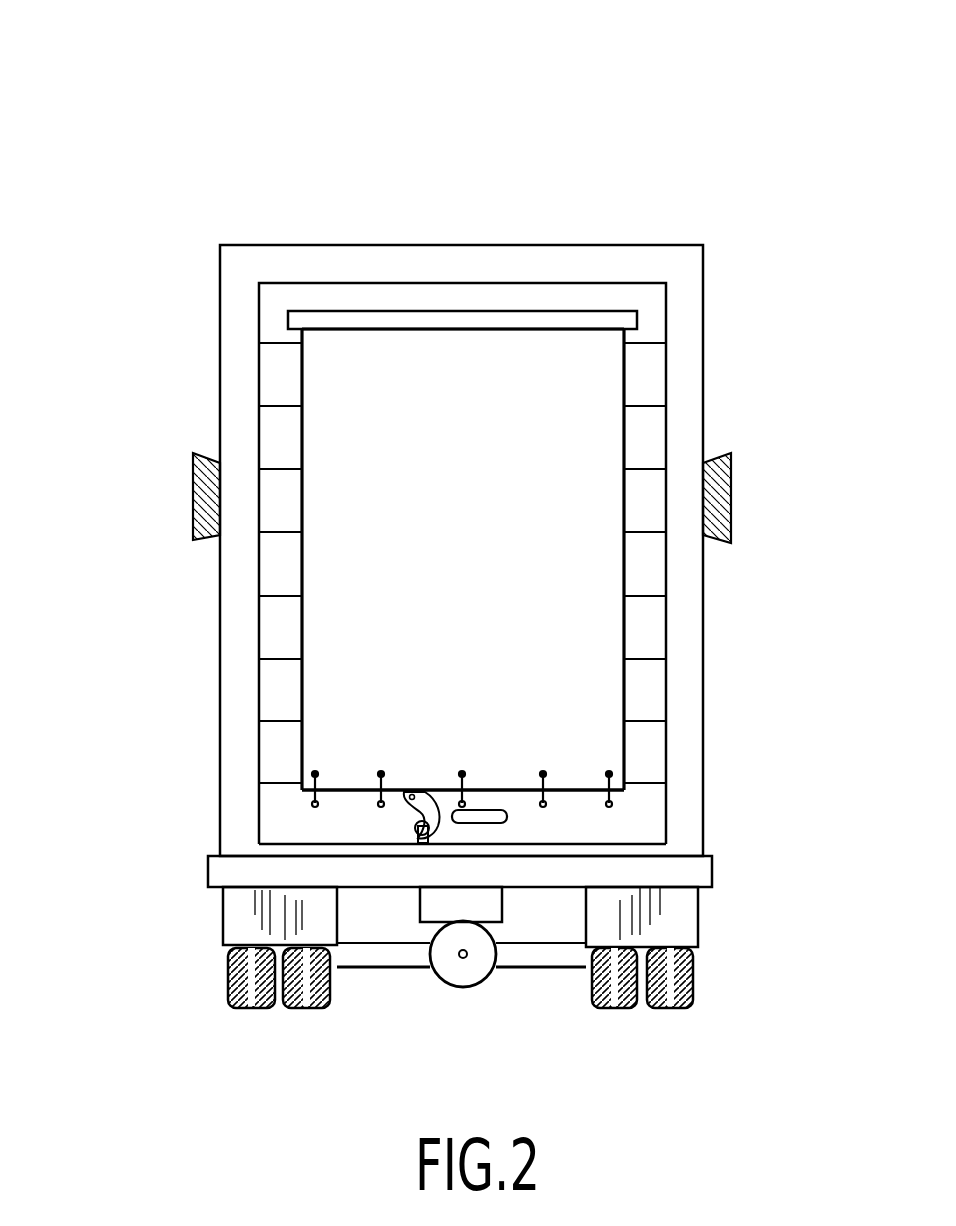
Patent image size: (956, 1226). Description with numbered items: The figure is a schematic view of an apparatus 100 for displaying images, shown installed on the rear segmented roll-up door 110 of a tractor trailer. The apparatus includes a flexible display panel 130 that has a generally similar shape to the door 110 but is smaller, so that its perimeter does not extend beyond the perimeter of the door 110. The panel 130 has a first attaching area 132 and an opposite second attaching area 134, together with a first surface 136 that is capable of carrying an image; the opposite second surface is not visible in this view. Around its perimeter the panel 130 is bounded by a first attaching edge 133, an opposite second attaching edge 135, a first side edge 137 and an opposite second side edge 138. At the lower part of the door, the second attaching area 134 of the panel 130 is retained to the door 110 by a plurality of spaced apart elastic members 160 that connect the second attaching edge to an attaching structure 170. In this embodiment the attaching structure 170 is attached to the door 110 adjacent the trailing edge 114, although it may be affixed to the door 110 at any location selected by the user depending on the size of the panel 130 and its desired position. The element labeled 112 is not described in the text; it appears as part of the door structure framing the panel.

The apparatus 100 is at (473, 132).
The segmented roll-up door 110 is at (287, 792).
The upper frame member 112 is at (487, 293).
The trailing edge 114 is at (593, 835).
The flexible display panel 130 is at (541, 608).
The first attaching area 132 is at (482, 355).
The first attaching edge 133 is at (280, 324).
The second attaching area 134 is at (500, 773).
The second attaching edge 135 is at (407, 792).
The first surface 136 is at (387, 372).
The first side edge 137 is at (302, 440).
The second side edge 138 is at (625, 627).
The elastic members 160 is at (320, 800).
The attaching structure 170 is at (282, 803).